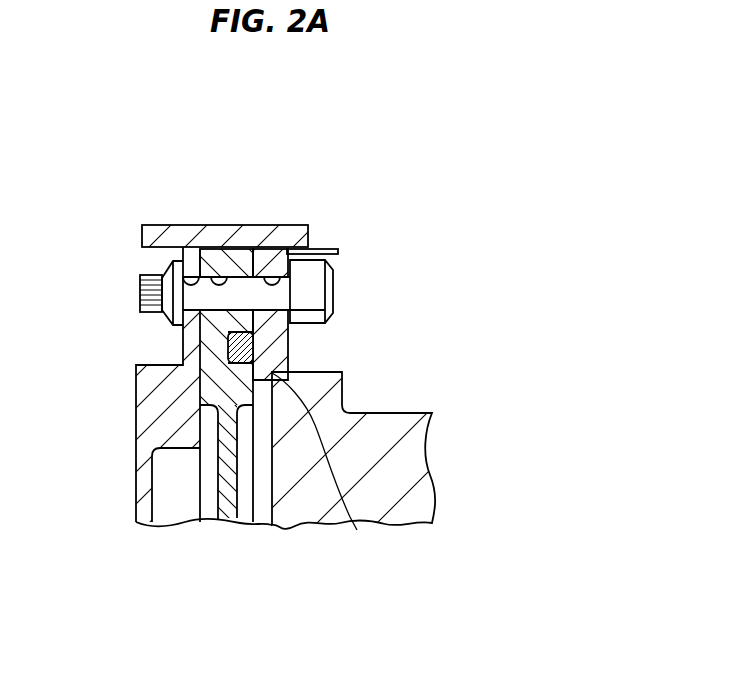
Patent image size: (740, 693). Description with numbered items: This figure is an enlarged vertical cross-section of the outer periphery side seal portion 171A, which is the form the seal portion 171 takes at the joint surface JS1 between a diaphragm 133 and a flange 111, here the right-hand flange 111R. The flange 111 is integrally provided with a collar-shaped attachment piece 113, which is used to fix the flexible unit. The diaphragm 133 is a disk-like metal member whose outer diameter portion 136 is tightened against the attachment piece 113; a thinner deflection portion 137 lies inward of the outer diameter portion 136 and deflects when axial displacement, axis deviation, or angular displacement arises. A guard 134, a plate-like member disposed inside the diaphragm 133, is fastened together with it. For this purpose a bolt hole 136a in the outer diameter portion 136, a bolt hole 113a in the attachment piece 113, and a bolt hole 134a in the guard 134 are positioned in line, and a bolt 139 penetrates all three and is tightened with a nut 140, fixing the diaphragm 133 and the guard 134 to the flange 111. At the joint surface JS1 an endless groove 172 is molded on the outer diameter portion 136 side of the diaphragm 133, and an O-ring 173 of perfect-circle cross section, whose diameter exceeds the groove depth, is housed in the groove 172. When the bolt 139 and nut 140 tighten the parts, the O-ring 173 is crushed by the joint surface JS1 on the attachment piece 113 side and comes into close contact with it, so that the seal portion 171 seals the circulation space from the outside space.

The flange 111 is at (459, 450).
The flange 111R is at (422, 470).
The attachment piece 113 is at (288, 333).
The bolt hole 113a is at (280, 276).
The diaphragm 133 is at (225, 533).
The guard 134 is at (136, 413).
The bolt hole 134a is at (184, 288).
The outer diameter portion 136 is at (239, 262).
The bolt hole 136a is at (221, 278).
The deflection portion 137 is at (215, 490).
The bolt 139 is at (140, 293).
The nut 140 is at (340, 279).
The seal portion 171 is at (507, 257).
The outer periphery side seal portion 171A is at (372, 315).
The groove 172 is at (228, 333).
The O-ring 173 is at (253, 350).
The joint surface JS1 is at (357, 530).